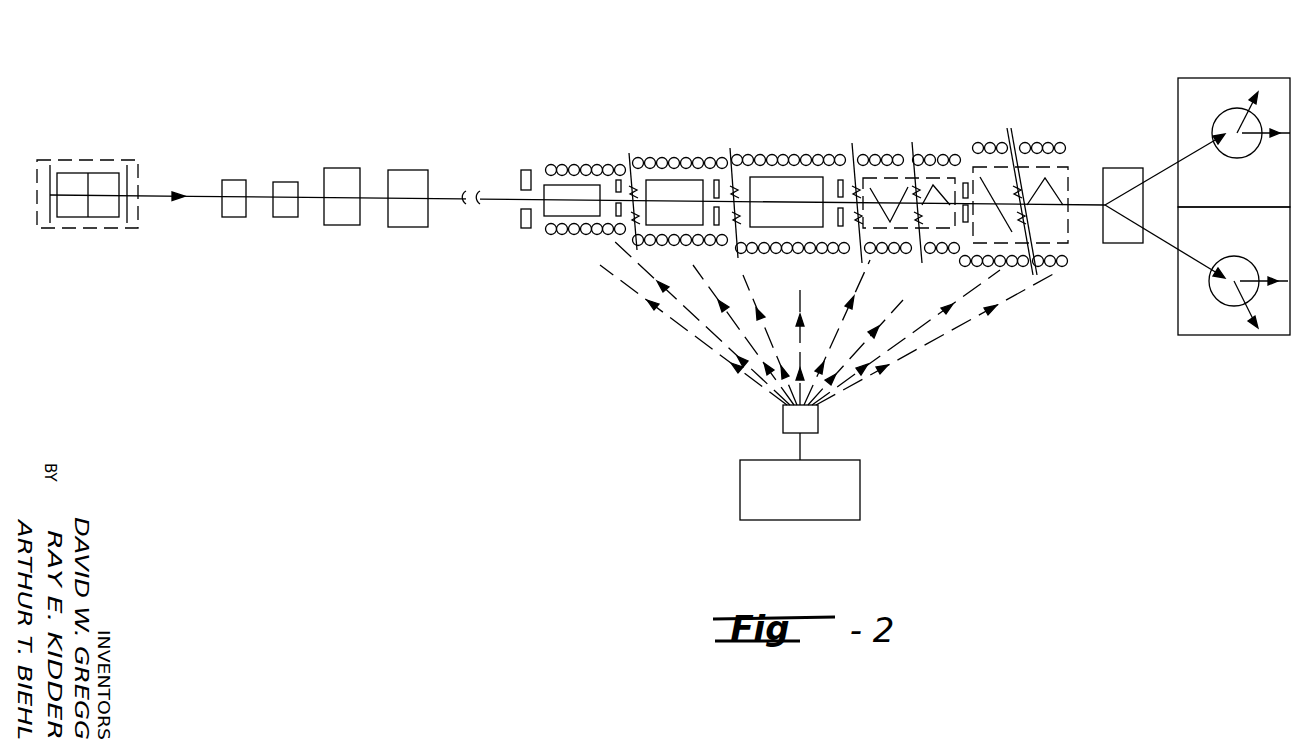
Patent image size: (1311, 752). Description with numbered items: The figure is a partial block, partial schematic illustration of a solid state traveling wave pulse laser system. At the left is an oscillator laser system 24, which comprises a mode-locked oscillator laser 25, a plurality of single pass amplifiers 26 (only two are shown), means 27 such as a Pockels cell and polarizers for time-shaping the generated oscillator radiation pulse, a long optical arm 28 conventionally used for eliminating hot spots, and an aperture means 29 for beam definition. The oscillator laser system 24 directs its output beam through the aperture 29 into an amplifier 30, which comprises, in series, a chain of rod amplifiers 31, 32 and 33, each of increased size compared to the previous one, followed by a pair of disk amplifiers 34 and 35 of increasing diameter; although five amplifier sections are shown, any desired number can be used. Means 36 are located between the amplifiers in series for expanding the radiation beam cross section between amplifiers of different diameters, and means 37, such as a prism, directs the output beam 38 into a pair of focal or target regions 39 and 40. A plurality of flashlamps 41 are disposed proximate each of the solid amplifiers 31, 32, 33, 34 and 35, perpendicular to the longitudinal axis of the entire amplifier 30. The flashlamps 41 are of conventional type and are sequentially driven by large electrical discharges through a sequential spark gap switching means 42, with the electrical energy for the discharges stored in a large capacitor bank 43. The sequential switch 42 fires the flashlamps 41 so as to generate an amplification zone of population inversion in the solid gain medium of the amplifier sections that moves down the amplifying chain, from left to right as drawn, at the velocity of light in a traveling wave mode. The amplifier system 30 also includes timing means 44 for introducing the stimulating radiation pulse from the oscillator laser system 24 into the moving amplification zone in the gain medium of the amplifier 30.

The oscillator laser system 24 is at (299, 150).
The mode-locked oscillator laser 25 is at (78, 160).
The single pass amplifiers 26 is at (232, 180).
The time-shaping means 27 is at (343, 170).
The timing means 44 is at (400, 172).
The long optical arm 28 is at (479, 172).
The aperture means 29 is at (525, 230).
The amplifier 30 is at (867, 123).
The rod amplifier 31 is at (583, 185).
The rod amplifier 32 is at (675, 178).
The rod amplifier 33 is at (800, 178).
The disk amplifier 34 is at (925, 177).
The disk amplifier 35 is at (1070, 182).
The beam expanding means 36 is at (617, 215).
The beam directing means 37 is at (1123, 167).
The output beam 38 is at (1092, 207).
The focal or target region 39 is at (1235, 78).
The focal or target region 40 is at (1248, 335).
The flashlamps 41 is at (558, 166).
The sequential spark gap switching means 42 is at (782, 420).
The capacitor bank 43 is at (860, 492).